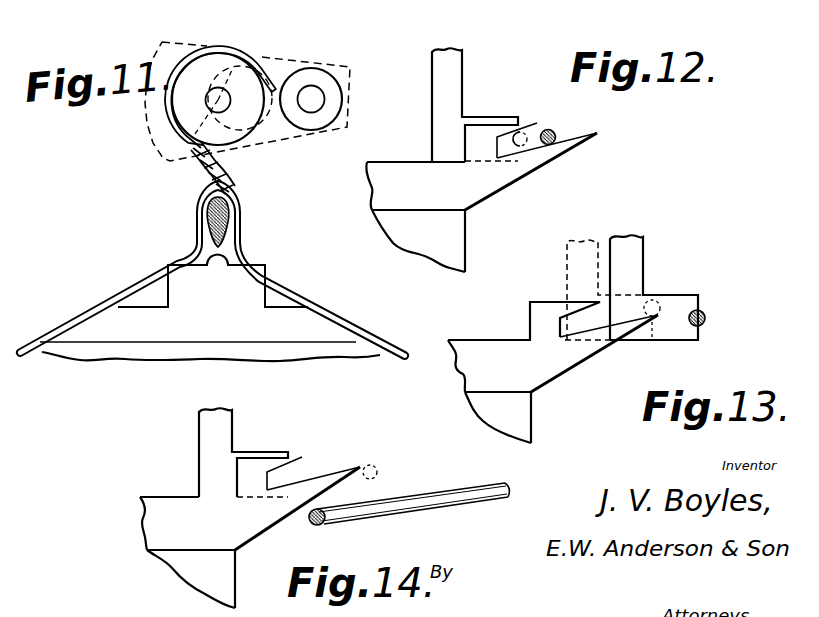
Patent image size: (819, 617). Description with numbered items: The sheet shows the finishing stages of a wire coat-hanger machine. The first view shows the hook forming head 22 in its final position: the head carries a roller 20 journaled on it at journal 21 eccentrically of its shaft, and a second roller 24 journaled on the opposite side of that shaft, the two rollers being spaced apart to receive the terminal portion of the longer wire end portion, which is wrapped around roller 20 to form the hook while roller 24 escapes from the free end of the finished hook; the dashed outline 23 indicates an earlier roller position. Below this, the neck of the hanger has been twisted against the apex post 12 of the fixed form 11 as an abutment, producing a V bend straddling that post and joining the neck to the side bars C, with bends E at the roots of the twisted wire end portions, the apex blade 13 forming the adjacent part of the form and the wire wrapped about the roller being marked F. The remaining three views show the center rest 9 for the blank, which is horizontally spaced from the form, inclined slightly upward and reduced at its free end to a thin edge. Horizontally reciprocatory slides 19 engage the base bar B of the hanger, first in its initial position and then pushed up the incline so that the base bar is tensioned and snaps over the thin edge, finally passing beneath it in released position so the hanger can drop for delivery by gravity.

In FIG. 11, the fixed form 11 is at (143, 352).
In FIG. 11, the apex blade 13 is at (183, 280).
In FIG. 11, the side bars C is at (78, 320).
In FIG. 11, the bends E is at (195, 240).
In FIG. 11, the apex post 12 is at (230, 207).
In FIG. 11, the journal 21 is at (192, 149).
In FIG. 11, the wire around wheel F is at (167, 114).
In FIG. 11, the roller 20 is at (228, 63).
In FIG. 11, the phantom circle 23 is at (267, 118).
In FIG. 11, the roller 24 is at (318, 77).
In FIG. 11, the hook forming head 22 is at (350, 65).
In FIG. 12, the center rest 9 is at (478, 192).
In FIG. 13, the center rest 9 is at (562, 363).
In FIG. 14, the center rest 9 is at (243, 528).
In FIG. 12, the slides 19 is at (450, 72).
In FIG. 13, the slides 19 is at (635, 250).
In FIG. 14, the slides 19 is at (220, 422).
In FIG. 12, the base bar B is at (557, 132).
In FIG. 13, the base bar B is at (677, 292).
In FIG. 14, the base bar B is at (378, 470).